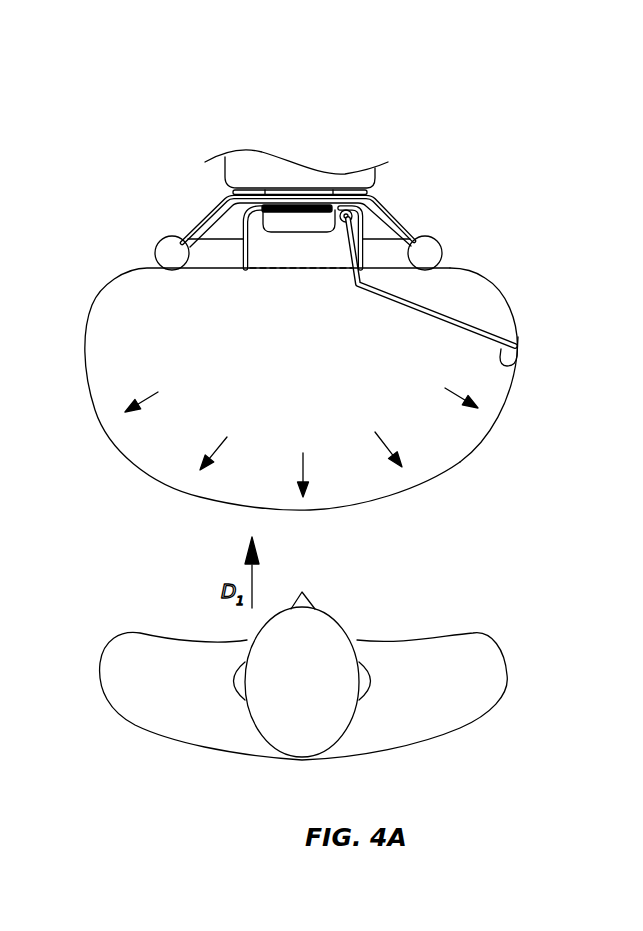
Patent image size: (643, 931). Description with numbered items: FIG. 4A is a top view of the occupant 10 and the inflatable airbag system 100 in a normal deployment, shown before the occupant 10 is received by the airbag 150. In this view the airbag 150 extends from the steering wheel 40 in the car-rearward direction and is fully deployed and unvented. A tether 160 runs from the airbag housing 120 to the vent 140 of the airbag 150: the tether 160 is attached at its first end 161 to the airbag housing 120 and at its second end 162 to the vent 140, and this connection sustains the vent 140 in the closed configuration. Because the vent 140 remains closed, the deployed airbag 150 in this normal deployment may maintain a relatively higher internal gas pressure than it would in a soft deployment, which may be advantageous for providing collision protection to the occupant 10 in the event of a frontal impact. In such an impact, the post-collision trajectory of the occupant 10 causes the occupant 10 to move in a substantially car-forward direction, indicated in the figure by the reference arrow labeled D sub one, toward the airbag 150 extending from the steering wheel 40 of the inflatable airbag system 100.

The inflatable airbag system 100 is at (227, 90).
The airbag housing 120 is at (207, 213).
The steering wheel 40 is at (430, 253).
The first end 161 is at (353, 215).
The tether 160 is at (463, 333).
The second end 162 is at (517, 373).
The airbag 150 is at (115, 307).
The vent 140 is at (521, 333).
The occupant 10 is at (203, 698).